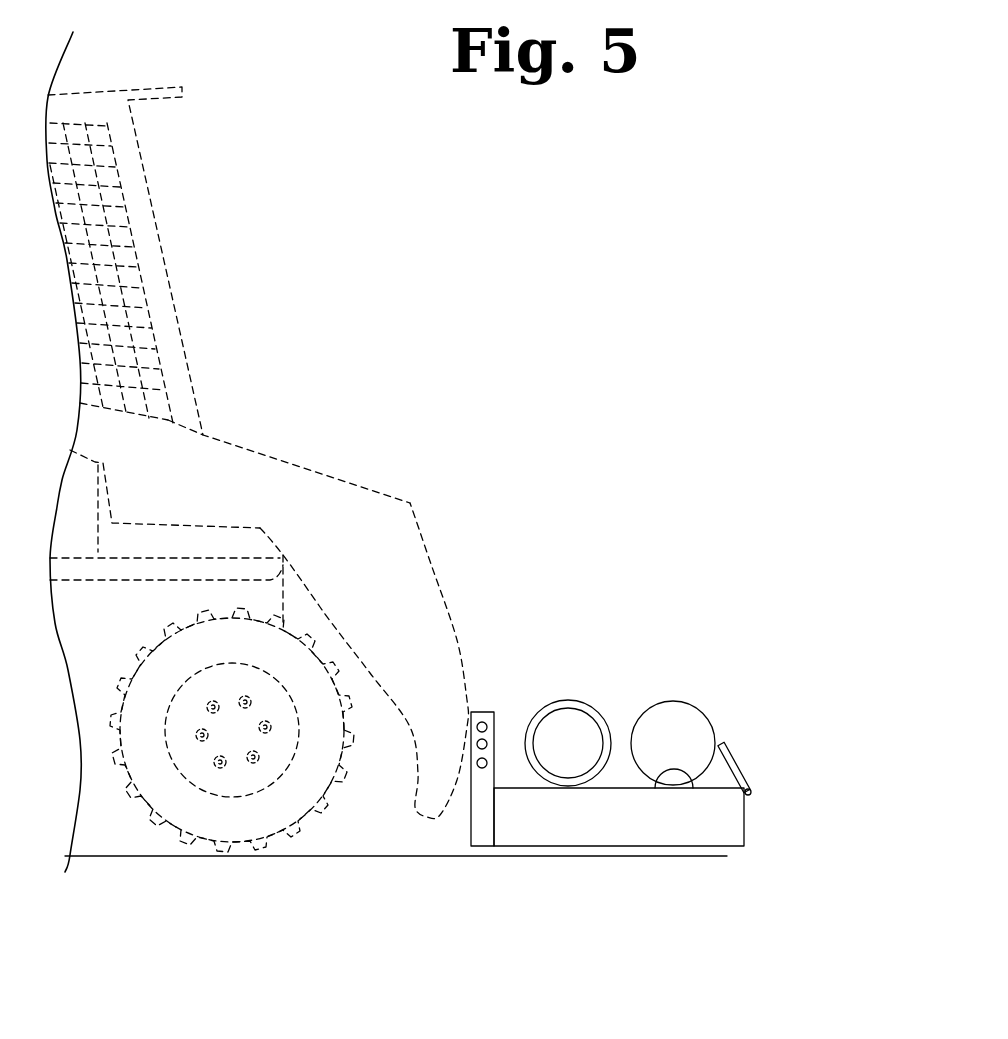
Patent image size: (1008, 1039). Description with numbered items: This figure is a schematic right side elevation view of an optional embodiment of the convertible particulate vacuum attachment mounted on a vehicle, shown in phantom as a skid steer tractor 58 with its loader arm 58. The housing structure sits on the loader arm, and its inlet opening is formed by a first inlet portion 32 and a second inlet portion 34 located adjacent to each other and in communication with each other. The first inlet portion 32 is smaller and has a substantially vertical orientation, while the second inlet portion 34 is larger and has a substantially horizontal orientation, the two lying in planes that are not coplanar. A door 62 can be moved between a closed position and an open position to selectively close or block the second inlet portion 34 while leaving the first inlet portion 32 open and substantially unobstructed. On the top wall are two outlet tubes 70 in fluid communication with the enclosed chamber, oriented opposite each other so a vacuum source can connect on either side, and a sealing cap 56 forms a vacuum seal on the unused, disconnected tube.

The skid steer tractor 58 is at (202, 370).
The sealing cap 56 is at (562, 737).
The outlet tube 70 is at (678, 737).
The door 62 is at (738, 764).
The first inlet portion 32 is at (757, 820).
The second inlet portion 34 is at (570, 853).